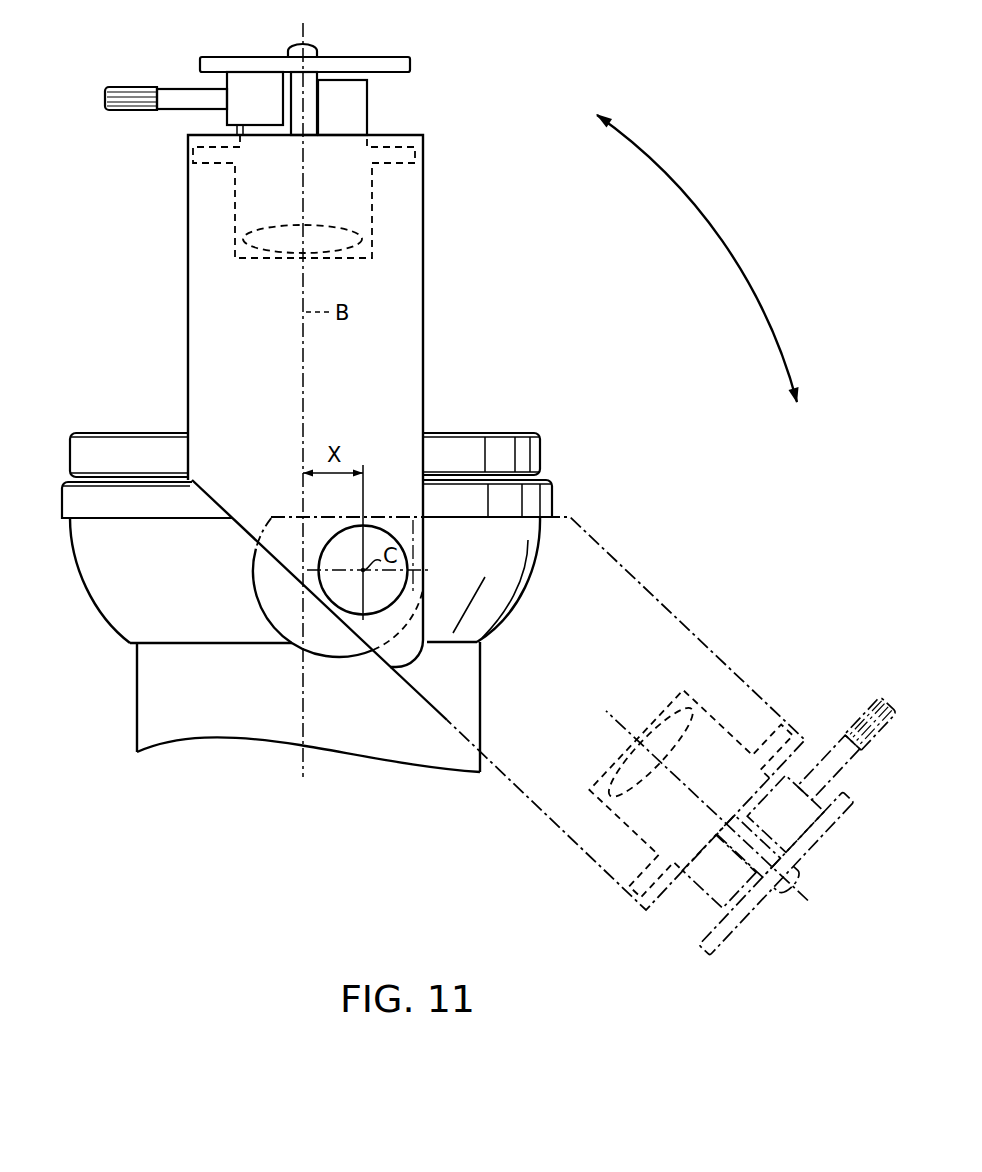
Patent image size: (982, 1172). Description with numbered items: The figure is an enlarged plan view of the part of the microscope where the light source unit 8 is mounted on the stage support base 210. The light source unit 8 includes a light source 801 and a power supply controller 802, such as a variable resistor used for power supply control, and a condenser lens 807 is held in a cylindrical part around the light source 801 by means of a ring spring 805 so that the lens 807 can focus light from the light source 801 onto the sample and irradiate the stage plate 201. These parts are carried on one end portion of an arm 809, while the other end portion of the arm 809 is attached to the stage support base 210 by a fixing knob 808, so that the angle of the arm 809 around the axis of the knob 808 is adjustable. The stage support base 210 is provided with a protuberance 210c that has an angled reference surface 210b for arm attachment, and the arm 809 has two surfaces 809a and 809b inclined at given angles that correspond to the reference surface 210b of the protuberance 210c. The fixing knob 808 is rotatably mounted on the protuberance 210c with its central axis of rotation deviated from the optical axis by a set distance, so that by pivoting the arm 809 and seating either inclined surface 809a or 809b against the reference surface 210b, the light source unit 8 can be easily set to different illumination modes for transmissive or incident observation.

The light source unit 8 is at (425, 56).
The light source 801 is at (320, 112).
The power supply controller 802 is at (143, 85).
The ring spring 805 is at (233, 190).
The condenser lens 807 is at (338, 227).
The arm 809 is at (197, 343).
The inclined surface of arm 809a is at (237, 525).
The inclined surface of arm 809b is at (425, 380).
The stage plate 201 is at (117, 447).
The stage support base 210 is at (118, 595).
The reference surface 210b is at (292, 580).
The protuberance 210c is at (293, 623).
The fixing knob 808 is at (346, 595).